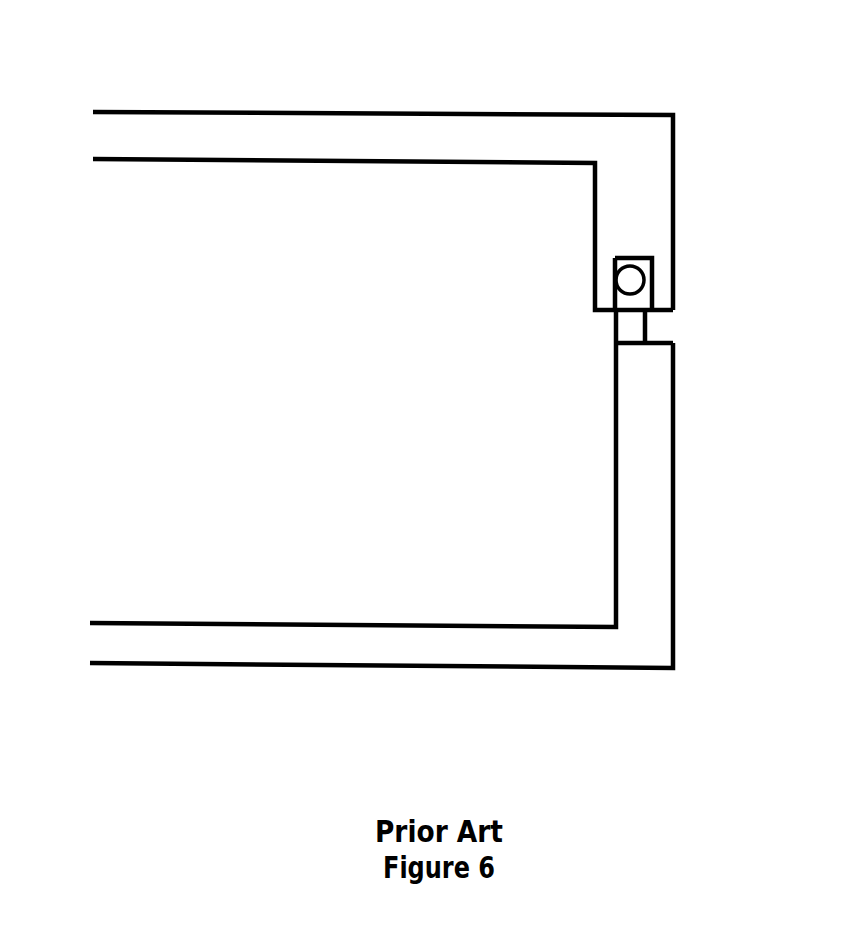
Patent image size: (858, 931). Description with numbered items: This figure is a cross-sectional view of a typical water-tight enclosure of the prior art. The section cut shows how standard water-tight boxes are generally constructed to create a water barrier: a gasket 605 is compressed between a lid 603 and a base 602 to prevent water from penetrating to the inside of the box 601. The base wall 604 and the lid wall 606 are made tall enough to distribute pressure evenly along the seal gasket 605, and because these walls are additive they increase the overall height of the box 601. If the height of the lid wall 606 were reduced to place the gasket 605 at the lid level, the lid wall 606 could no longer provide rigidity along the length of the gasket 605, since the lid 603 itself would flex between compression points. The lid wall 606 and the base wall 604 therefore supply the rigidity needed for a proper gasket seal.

The box 601 is at (235, 382).
The base 602 is at (540, 643).
The lid 603 is at (452, 138).
The base wall 604 is at (637, 408).
The gasket 605 is at (642, 291).
The lid wall 606 is at (630, 160).